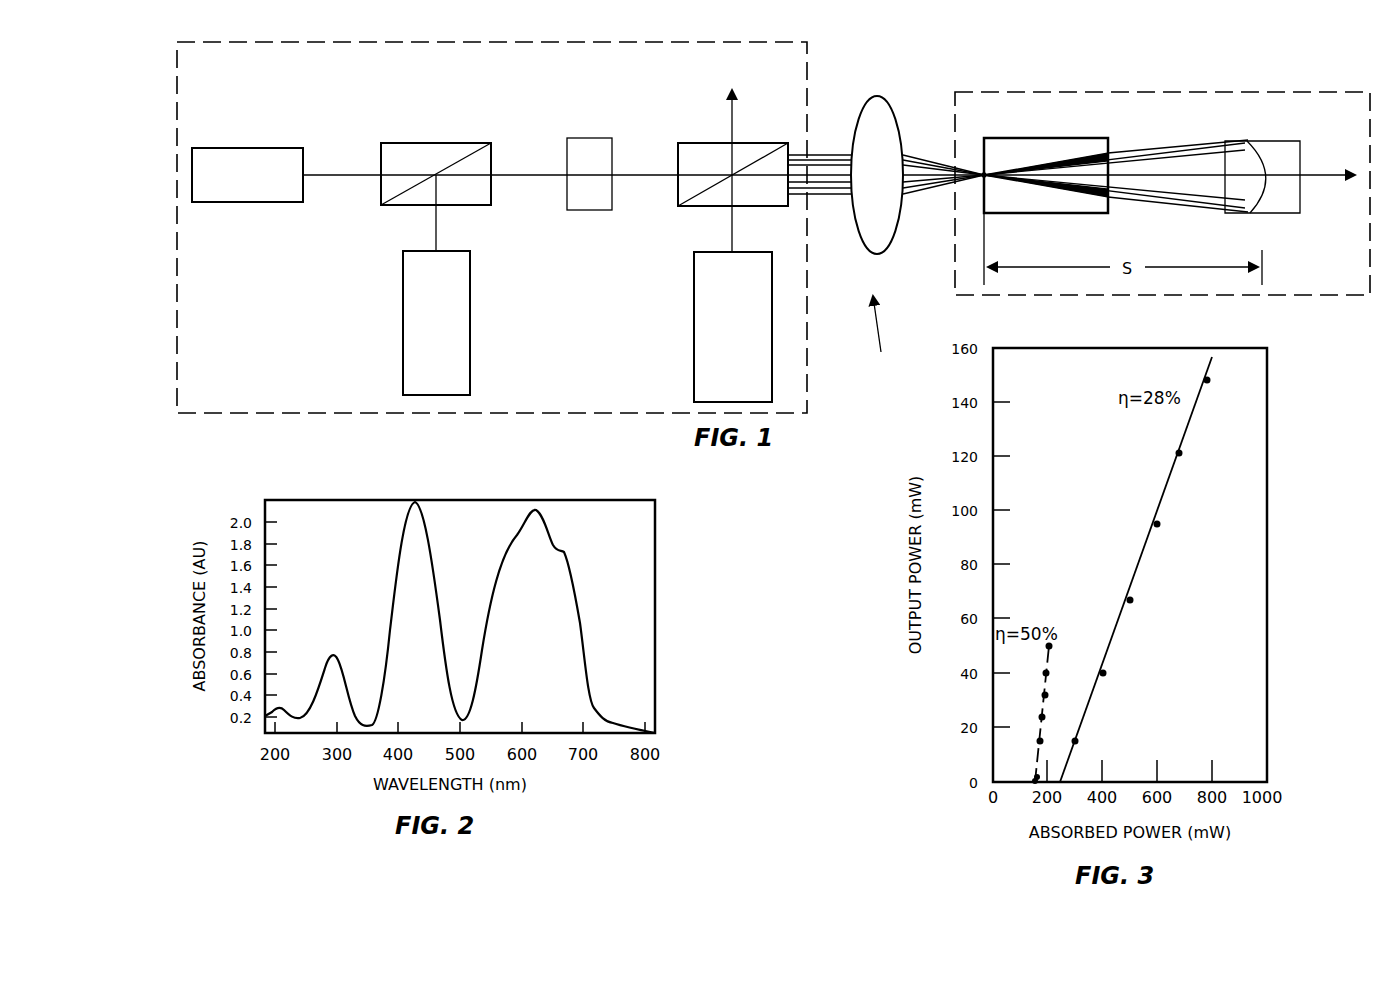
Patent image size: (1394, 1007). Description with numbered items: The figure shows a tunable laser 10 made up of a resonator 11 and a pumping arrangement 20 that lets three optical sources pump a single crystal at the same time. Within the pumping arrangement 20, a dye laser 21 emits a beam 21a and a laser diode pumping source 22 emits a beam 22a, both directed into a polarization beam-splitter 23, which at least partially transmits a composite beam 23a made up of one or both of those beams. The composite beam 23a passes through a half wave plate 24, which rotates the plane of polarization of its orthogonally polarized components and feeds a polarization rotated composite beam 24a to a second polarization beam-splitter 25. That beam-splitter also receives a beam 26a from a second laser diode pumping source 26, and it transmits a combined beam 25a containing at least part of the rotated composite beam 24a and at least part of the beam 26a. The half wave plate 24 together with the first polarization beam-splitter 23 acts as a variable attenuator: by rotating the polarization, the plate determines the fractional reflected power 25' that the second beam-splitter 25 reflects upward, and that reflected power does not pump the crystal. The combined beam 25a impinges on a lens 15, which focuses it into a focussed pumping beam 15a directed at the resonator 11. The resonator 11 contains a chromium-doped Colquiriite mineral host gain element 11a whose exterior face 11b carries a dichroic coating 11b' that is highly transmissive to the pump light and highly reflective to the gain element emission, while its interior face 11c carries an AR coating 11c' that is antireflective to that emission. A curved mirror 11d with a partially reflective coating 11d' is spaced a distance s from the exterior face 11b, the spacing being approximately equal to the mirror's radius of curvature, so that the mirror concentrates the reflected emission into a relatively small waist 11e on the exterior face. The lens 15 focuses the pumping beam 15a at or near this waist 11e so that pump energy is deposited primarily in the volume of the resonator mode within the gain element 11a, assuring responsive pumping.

The tunable laser 10 is at (881, 338).
The resonator 11 is at (1092, 92).
The Cr3+ doped Colquiriite mineral host gain element 11a is at (1058, 138).
The exterior face 11b is at (978, 112).
The dichroic coating 11b' is at (943, 232).
The interior face 11c is at (1048, 202).
The AR coating 11c' is at (1142, 197).
The mirror 11d is at (1290, 177).
The reflective coating 11d' is at (1233, 224).
The waist 11e is at (984, 180).
The lens 15 is at (903, 142).
The focussed pumping beam 15a is at (922, 184).
The pumping arrangement 20 is at (177, 282).
The dye laser 21 is at (403, 306).
The beam 21a is at (436, 236).
The laser diode pumping source 22 is at (252, 202).
The beam 22a is at (343, 177).
The polarization beam-splitter 23 is at (491, 150).
The composite beam 23a is at (542, 177).
The half wave plate 24 is at (595, 210).
The polarization rotated composite beam 24a is at (638, 177).
The polarization beam-splitter 25 is at (719, 195).
The fractional reflected power 25' is at (733, 115).
The combined beam 25a is at (828, 188).
The laser diode pumping source 26 is at (694, 306).
The beam 26a is at (735, 232).